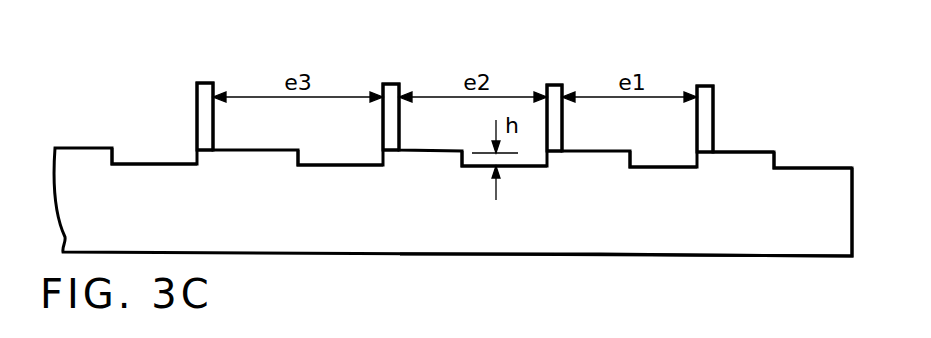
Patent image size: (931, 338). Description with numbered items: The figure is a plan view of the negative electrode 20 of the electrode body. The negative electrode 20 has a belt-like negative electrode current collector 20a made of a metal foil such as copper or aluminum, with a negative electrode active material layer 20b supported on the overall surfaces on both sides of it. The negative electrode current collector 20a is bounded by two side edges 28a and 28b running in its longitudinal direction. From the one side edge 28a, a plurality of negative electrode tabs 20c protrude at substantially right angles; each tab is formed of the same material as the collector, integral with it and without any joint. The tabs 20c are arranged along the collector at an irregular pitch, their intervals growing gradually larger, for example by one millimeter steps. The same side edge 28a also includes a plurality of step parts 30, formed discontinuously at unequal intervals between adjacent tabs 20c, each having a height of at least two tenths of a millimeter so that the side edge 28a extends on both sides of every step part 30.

The negative electrode 20 is at (135, 118).
The negative electrode current collector 20a is at (505, 256).
The negative electrode active material layer 20b is at (607, 240).
The negative electrode tab 20c is at (204, 82).
The side edge 28a is at (750, 151).
The side edge 28b is at (742, 257).
The step part 30 is at (117, 160).